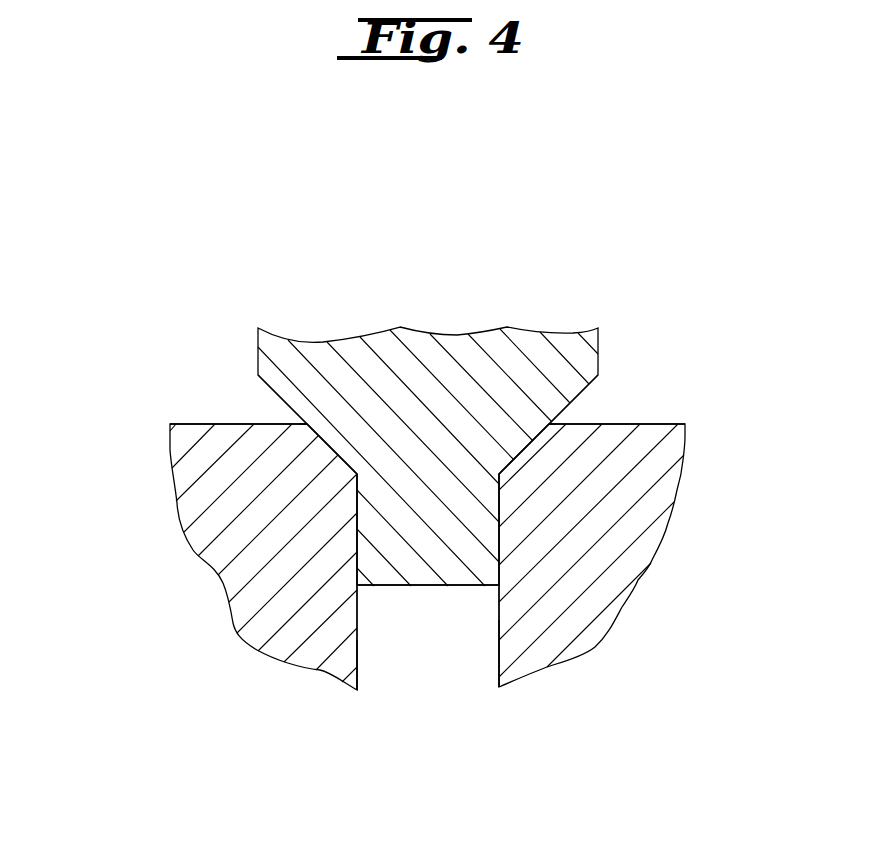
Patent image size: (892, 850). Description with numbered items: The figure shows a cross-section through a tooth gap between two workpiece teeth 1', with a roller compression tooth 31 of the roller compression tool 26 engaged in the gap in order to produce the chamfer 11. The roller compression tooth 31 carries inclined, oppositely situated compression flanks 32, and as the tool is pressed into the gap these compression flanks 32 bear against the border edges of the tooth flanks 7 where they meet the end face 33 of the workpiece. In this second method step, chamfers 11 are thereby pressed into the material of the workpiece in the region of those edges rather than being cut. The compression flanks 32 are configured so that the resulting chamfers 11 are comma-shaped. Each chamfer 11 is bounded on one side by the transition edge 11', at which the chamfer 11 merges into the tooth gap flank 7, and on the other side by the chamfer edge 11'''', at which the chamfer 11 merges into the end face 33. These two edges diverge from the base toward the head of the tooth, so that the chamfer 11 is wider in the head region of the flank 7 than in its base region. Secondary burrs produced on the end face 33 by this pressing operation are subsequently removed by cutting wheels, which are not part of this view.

The roller compression tool 26 is at (380, 350).
The workpiece teeth 1' is at (427, 549).
The compression flanks 32 is at (307, 424).
The end face 33 is at (235, 424).
The chamfer edge 11'''' is at (426, 493).
The chamfer 11 is at (431, 522).
The transition edge 11' is at (426, 581).
The tooth flanks 7 is at (357, 661).
The roller compression tooth 31 is at (420, 585).